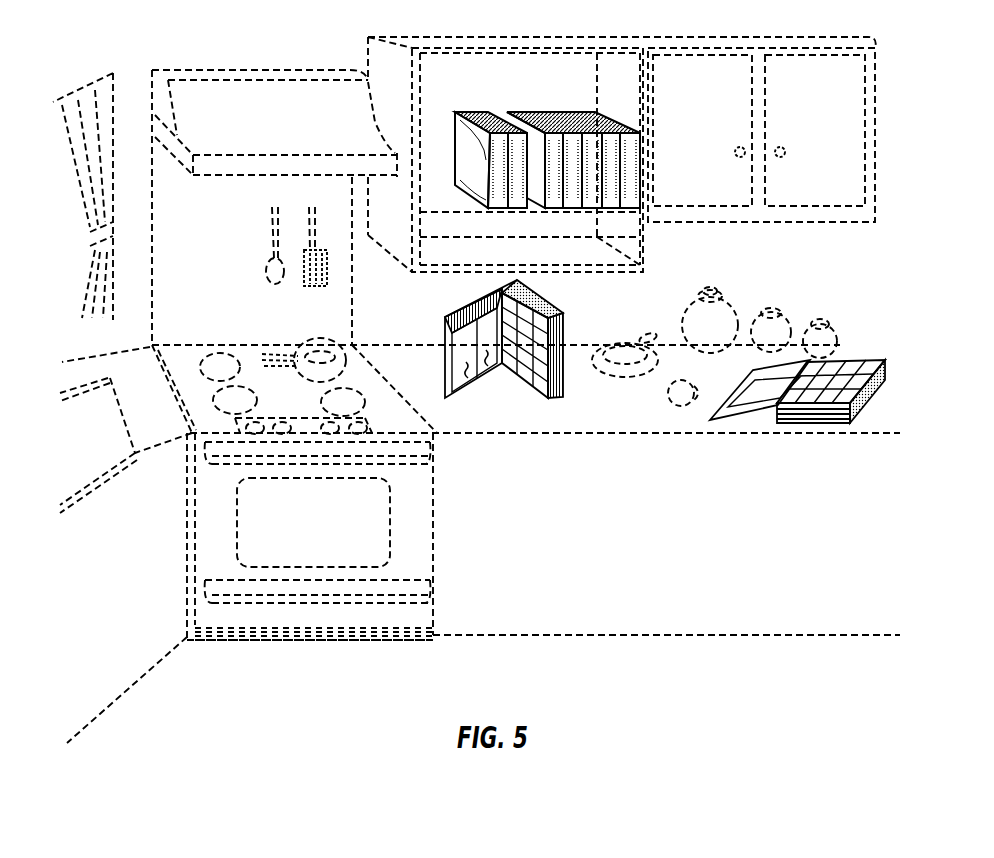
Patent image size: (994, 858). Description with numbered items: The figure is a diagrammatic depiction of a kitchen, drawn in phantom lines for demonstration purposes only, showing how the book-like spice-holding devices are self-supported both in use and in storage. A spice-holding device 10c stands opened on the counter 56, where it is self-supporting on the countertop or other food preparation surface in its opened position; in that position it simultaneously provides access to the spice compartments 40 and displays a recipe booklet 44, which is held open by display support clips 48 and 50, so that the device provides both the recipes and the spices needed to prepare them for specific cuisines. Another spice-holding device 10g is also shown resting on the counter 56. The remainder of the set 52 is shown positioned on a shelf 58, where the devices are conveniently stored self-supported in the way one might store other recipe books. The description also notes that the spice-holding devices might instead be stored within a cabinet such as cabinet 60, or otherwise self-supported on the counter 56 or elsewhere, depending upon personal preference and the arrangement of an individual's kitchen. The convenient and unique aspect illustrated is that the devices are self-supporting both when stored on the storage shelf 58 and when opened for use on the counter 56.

The spice-holding device 10c is at (507, 353).
The flat spice container case 10g is at (847, 367).
The spice compartments 40 is at (527, 375).
The recipe booklet 44 is at (462, 338).
The display support clip 48 is at (468, 380).
The display support clip 50 is at (488, 372).
The set 52 is at (559, 98).
The counter 56 is at (576, 360).
The shelf 58 is at (428, 193).
The cabinet 60 is at (830, 143).